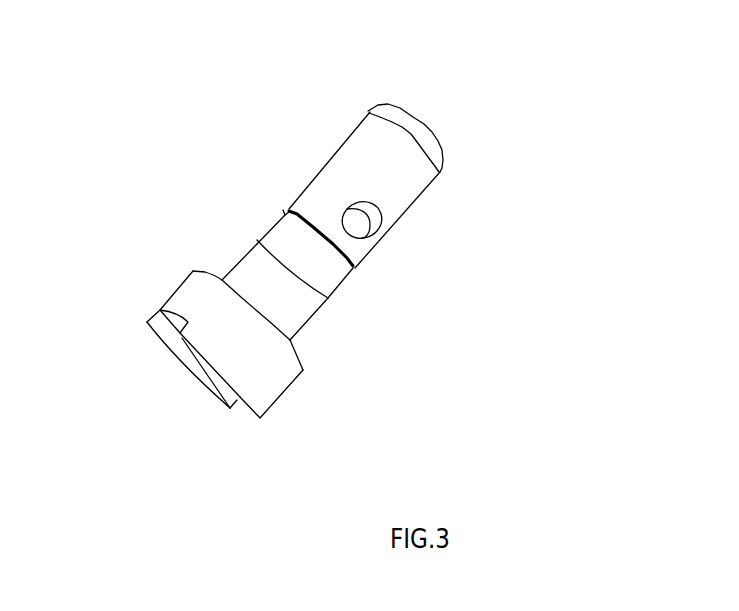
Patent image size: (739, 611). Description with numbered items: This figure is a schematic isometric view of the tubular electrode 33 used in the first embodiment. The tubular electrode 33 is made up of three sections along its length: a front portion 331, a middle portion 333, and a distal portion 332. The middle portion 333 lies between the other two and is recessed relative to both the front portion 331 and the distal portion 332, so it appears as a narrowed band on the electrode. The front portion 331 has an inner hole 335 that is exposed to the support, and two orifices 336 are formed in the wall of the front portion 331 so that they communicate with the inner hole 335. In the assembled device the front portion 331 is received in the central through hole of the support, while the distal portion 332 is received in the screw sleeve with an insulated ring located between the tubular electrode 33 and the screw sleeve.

The tubular electrode 33 is at (210, 120).
The front portion 331 is at (375, 153).
The distal portion 332 is at (262, 288).
The middle portion 333 is at (320, 262).
The inner hole 335 is at (423, 125).
The orifices 336 is at (357, 214).